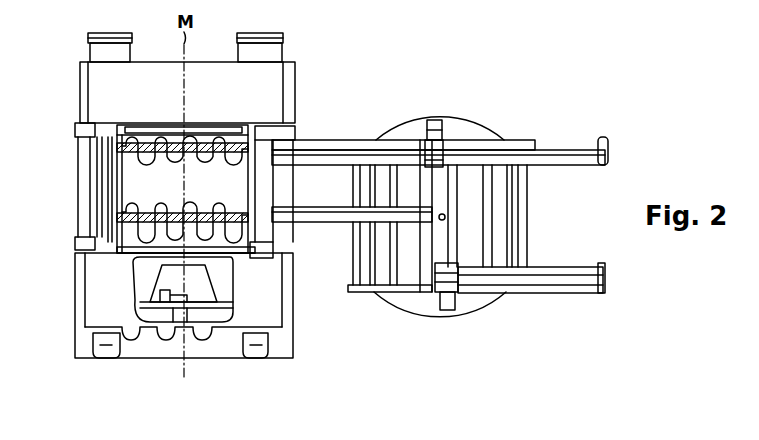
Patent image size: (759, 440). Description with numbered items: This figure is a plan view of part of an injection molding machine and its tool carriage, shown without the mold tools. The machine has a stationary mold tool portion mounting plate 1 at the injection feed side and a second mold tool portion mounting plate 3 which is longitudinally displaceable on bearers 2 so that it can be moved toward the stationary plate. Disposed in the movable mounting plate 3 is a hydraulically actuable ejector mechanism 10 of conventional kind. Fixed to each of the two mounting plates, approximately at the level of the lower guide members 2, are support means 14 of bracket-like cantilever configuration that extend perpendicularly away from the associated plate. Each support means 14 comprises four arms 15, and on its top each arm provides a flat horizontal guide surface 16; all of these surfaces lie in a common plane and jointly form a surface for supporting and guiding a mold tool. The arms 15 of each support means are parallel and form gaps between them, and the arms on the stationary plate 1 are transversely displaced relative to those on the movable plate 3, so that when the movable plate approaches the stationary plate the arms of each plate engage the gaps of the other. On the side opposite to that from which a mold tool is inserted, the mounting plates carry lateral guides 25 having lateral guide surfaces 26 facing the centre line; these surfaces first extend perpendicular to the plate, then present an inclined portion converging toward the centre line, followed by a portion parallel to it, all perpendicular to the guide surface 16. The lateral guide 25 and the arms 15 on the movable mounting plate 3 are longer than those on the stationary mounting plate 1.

The stationary mold tool portion mounting plate 1 is at (150, 72).
The bearers 2 is at (108, 186).
The second mold tool portion mounting plate 3 is at (95, 308).
The ejector mechanism 10 is at (216, 305).
The support means 14 is at (201, 130).
The arms 15 is at (206, 158).
The guide surface 16 is at (220, 228).
The lateral guides 25 is at (96, 140).
The lateral guide surfaces 26 is at (122, 150).